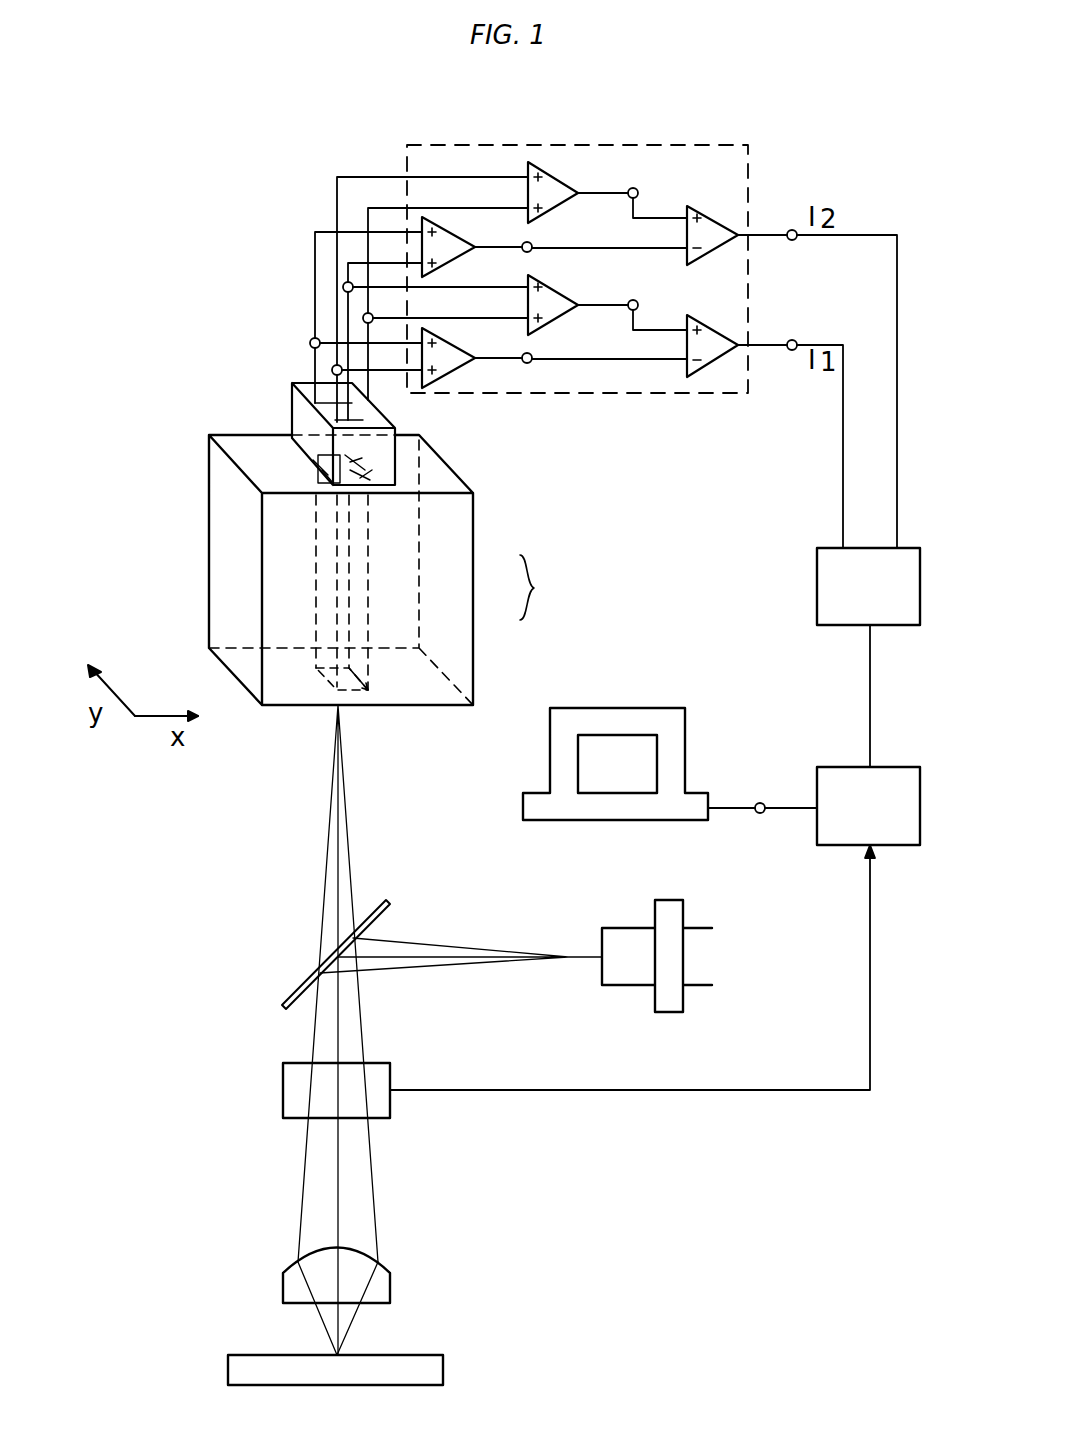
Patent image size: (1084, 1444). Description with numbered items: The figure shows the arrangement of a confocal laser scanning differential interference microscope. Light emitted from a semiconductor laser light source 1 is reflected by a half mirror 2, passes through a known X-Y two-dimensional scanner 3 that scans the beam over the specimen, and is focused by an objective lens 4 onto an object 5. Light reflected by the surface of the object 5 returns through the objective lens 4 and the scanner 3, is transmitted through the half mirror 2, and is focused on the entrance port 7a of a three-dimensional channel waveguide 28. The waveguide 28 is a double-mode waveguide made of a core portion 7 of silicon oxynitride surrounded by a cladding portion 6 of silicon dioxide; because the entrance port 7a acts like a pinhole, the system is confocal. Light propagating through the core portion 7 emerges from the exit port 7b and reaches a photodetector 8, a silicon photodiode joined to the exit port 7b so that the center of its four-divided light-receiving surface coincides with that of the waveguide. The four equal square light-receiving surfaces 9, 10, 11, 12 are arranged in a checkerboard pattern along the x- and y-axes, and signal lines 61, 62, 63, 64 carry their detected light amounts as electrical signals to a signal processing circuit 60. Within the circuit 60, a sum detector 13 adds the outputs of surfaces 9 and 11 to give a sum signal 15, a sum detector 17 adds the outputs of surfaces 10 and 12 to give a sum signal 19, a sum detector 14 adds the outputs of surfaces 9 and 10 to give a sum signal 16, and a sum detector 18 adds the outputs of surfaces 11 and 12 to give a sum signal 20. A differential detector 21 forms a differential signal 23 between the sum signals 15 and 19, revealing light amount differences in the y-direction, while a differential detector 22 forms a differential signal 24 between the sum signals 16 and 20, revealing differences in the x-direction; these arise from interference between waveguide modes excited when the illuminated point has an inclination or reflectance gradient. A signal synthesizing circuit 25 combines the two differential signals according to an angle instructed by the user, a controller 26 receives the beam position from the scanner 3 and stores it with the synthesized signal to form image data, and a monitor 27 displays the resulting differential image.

The semiconductor laser light source 1 is at (613, 928).
The half mirror 2 is at (380, 900).
The X-Y two-dimensional scanner 3 is at (283, 1090).
The objective lens 4 is at (390, 1283).
The object 5 is at (443, 1370).
The cladding portion 6 is at (470, 580).
The core portion 7 is at (355, 628).
The entrance port 7a is at (328, 675).
The exit port 7b is at (317, 453).
The photodetector 8 is at (292, 418).
The light-receiving surface 9 is at (312, 455).
The light-receiving surface 10 is at (323, 473).
The light-receiving surface 11 is at (357, 458).
The light-receiving surface 12 is at (397, 477).
The sum detector 13 is at (433, 218).
The sum detector 14 is at (450, 375).
The sum signal 15 is at (490, 245).
The sum signal 16 is at (500, 360).
The sum detector 17 is at (540, 162).
The sum detector 18 is at (555, 325).
The sum signal 19 is at (600, 192).
The sum signal 20 is at (610, 305).
The differential detector 21 is at (700, 205).
The differential detector 22 is at (715, 365).
The differential signal 23 is at (760, 233).
The differential signal 24 is at (757, 343).
The signal synthesizing circuit 25 is at (817, 590).
The controller 26 is at (830, 765).
The monitor 27 is at (632, 706).
The three-dimensional channel waveguide 28 is at (389, 590).
The signal processing circuit 60 is at (720, 147).
The signal line 61 is at (310, 341).
The signal line 62 is at (333, 376).
The signal line 63 is at (370, 383).
The signal line 64 is at (344, 318).